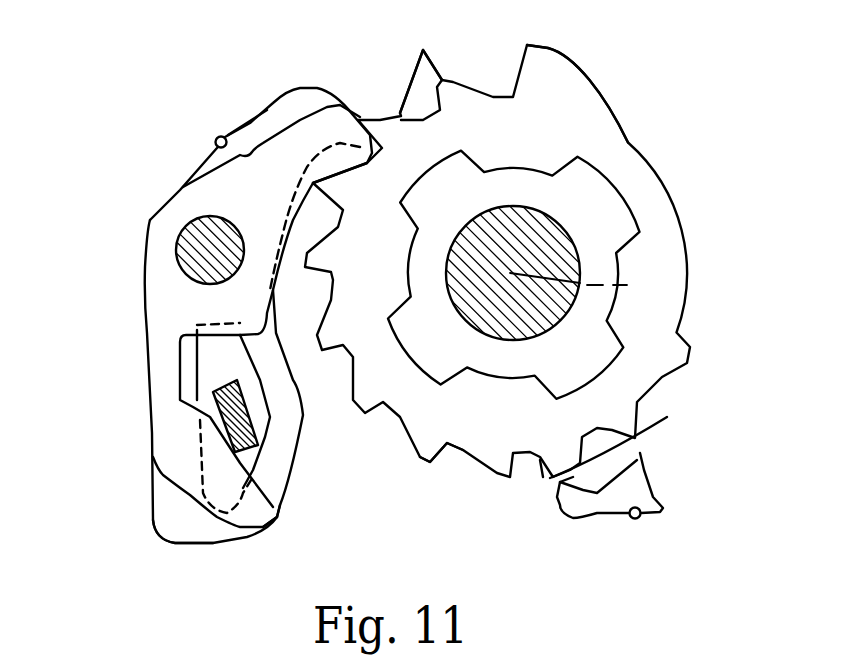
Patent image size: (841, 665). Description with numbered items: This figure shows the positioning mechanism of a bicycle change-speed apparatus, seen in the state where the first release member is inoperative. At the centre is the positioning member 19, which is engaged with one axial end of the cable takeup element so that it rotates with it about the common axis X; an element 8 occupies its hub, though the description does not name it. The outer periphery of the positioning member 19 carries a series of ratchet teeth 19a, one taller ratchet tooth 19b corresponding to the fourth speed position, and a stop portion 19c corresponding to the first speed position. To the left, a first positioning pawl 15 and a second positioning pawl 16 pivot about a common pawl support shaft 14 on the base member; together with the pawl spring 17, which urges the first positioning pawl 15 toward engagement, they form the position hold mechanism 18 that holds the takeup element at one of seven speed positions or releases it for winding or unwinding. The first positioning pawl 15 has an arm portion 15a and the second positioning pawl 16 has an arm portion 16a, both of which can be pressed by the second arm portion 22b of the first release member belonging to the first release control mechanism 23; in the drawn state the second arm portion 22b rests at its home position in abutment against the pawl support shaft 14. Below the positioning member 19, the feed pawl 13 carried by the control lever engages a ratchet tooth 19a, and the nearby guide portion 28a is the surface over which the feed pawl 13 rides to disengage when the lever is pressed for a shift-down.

The shaft 8 is at (514, 328).
The feed pawl 13 is at (598, 517).
The pawl support shaft 14 is at (190, 251).
The first positioning pawl 15 is at (297, 90).
The arm portion of the first positioning pawl 15a is at (153, 518).
The second positioning pawl 16 is at (333, 106).
The arm portion of the second positioning pawl 16a is at (265, 500).
The pawl spring 17 is at (215, 139).
The position hold mechanism 18 is at (269, 97).
The positioning member 19 is at (623, 153).
The ratchet tooth 19a is at (462, 508).
The ratchet tooth 19b is at (320, 183).
The stop portion 19c is at (550, 48).
The second arm portion 22b is at (190, 407).
The first release control mechanism 23 is at (146, 447).
The guide portion 28a is at (548, 481).
The common axis X is at (577, 282).